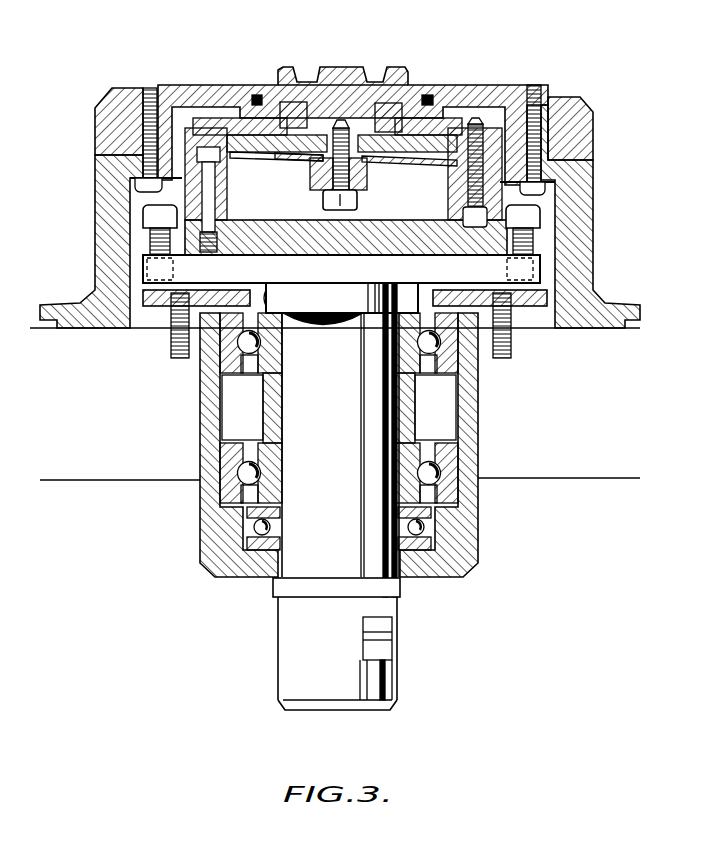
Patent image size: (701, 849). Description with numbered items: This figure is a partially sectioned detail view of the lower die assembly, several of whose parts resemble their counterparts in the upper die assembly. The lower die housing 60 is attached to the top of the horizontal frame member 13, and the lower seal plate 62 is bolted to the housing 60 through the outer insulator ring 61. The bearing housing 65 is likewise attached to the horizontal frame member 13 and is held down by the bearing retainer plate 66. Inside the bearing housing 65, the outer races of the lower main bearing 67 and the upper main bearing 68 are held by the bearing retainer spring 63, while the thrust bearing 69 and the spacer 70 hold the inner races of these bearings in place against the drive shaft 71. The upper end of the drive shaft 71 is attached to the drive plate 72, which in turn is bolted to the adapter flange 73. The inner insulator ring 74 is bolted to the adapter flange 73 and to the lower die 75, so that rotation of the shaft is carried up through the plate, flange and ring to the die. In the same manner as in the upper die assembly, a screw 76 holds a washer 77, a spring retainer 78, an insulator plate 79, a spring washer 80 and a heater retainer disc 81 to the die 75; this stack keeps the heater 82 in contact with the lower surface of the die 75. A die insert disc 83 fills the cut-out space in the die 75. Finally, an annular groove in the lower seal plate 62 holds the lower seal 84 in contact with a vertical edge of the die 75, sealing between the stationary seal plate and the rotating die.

The horizontal frame member 13 is at (570, 481).
The lower die housing 60 is at (594, 184).
The outer insulator ring 61 is at (580, 98).
The lower seal plate 62 is at (505, 92).
The bearing retainer spring 63 is at (452, 292).
The bearing housing 65 is at (480, 440).
The bearing retainer plate 66 is at (545, 298).
The lower main bearing 67 is at (284, 466).
The upper main bearing 68 is at (284, 344).
The thrust bearing 69 is at (284, 531).
The spacer 70 is at (283, 418).
The drive shaft 71 is at (278, 640).
The drive plate 72 is at (351, 278).
The adapter flange 73 is at (400, 222).
The inner insulator ring 74 is at (452, 193).
The lower die 75 is at (398, 70).
The screw 76 is at (358, 201).
The washer 77 is at (322, 190).
The spring retainer 78 is at (368, 180).
The insulator plate 79 is at (247, 160).
The spring washer 80 is at (272, 153).
The heater retainer disc 81 is at (240, 130).
The heater 82 is at (441, 128).
The die insert disc 83 is at (388, 103).
The lower seal 84 is at (429, 96).